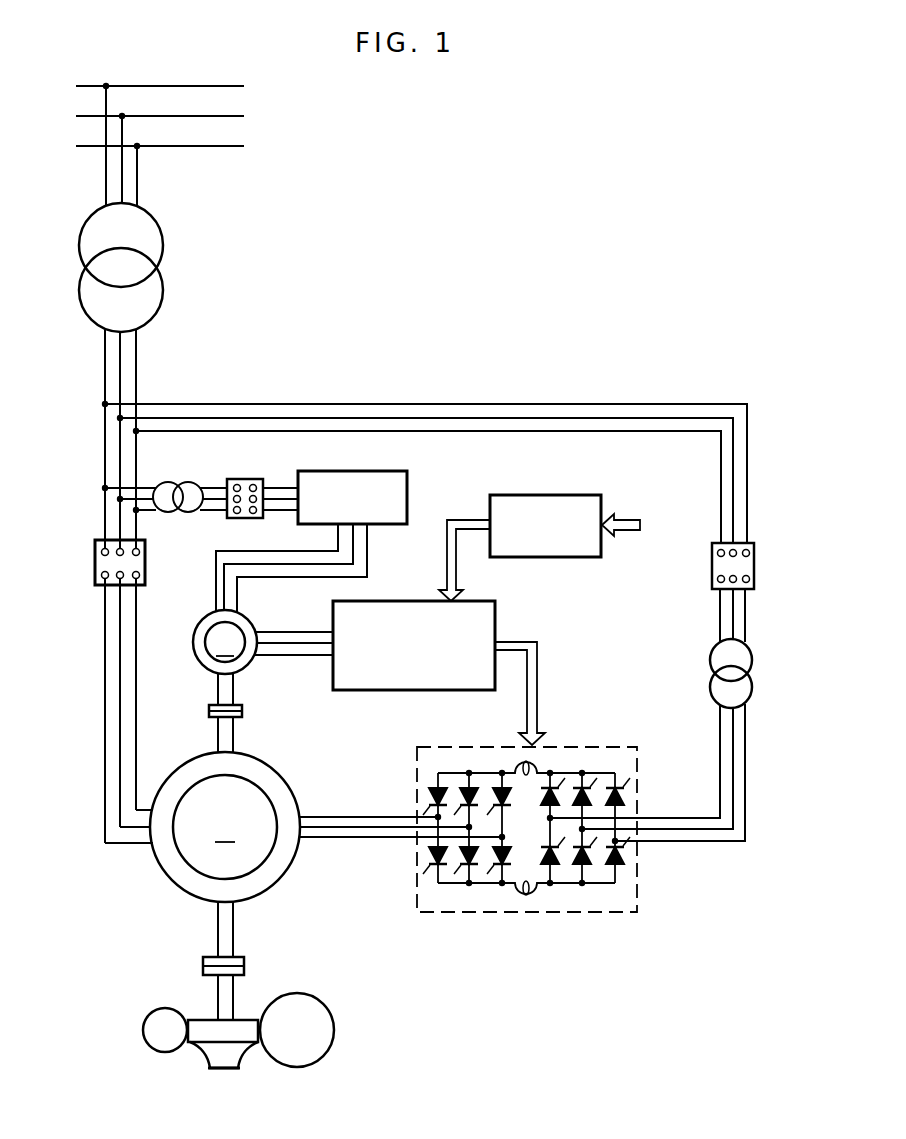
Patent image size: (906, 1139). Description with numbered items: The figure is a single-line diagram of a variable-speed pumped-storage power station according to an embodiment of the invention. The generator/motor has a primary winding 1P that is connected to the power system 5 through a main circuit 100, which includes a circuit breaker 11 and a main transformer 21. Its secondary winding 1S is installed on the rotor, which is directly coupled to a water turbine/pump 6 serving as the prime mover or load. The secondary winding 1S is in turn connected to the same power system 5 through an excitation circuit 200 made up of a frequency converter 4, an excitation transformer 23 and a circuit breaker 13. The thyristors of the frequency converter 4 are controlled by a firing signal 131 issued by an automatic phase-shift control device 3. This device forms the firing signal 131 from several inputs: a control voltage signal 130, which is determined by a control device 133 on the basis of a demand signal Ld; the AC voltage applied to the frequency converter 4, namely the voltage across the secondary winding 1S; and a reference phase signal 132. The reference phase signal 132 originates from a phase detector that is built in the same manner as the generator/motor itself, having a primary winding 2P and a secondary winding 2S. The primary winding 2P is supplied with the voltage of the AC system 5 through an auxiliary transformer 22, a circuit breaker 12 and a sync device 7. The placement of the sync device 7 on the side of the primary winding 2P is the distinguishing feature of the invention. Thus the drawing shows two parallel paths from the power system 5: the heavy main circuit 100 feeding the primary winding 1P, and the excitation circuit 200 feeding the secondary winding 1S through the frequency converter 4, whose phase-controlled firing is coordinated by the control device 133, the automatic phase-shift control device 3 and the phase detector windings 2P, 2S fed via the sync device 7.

The power system 5 is at (185, 85).
The main transformer 21 is at (162, 266).
The main circuit 100 is at (97, 650).
The excitation circuit 200 is at (491, 394).
The auxiliary transformer 22 is at (177, 481).
The circuit breaker 12 is at (250, 478).
The sync device 7 is at (407, 492).
The control device 133 is at (559, 557).
The control voltage signal 130 is at (447, 562).
The circuit breaker 13 is at (755, 553).
The excitation transformer 23 is at (753, 678).
The circuit breaker 11 is at (95, 562).
The primary winding of phase detector 2P is at (250, 623).
The secondary winding of phase detector 2S is at (207, 658).
The reference phase signal 132 is at (295, 657).
The automatic phase-shift control device 3 is at (455, 690).
The firing signal 131 is at (538, 698).
The primary winding of generator/motor 1P is at (285, 775).
The secondary winding of generator/motor 1S is at (270, 860).
The water turbine/pump 6 is at (202, 1057).
The frequency converter 4 is at (543, 912).